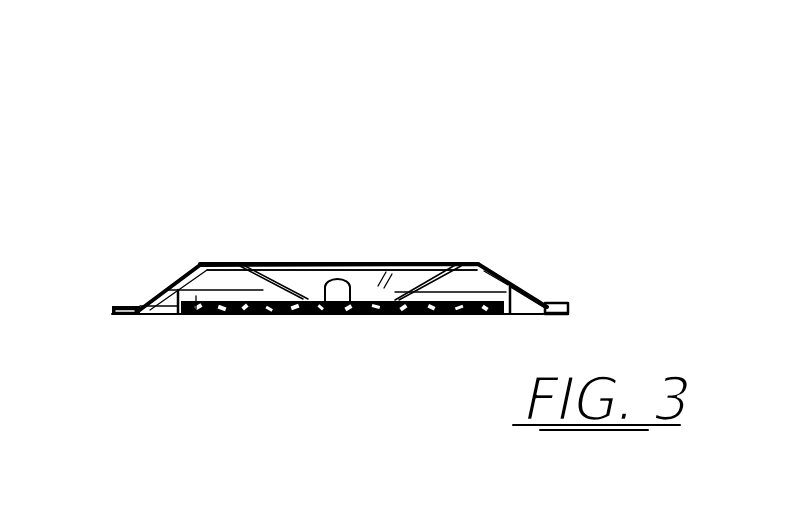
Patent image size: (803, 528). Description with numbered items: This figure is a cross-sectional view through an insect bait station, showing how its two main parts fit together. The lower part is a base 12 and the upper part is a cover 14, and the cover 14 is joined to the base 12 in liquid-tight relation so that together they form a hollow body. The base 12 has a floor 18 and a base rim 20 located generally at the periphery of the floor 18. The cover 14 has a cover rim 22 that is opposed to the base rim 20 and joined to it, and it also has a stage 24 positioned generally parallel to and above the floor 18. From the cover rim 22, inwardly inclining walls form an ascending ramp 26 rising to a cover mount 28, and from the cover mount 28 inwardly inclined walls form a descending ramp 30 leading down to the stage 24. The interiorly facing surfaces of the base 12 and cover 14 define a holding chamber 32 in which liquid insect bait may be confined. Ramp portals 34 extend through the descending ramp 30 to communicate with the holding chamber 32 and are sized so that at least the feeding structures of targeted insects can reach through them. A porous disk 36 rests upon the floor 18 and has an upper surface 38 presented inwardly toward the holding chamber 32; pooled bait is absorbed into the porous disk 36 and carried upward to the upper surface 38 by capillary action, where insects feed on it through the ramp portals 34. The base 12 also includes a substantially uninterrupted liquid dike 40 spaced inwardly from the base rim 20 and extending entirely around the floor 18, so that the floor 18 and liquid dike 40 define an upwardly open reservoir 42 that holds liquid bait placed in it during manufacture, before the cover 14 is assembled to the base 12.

The base 12 is at (353, 314).
The cover 14 is at (417, 298).
The floor 18 is at (494, 306).
The base rim 20 is at (560, 314).
The cover rim 22 is at (560, 303).
The stage 24 is at (365, 297).
The ascending ramp 26 is at (182, 275).
The cover mount 28 is at (212, 263).
The descending ramp 30 is at (280, 264).
The holding chamber 32 is at (231, 276).
The ramp portals 34 is at (337, 280).
The porous disk 36 is at (418, 313).
The upper surface 38 is at (460, 306).
The liquid dike 40 is at (175, 307).
The reservoir 42 is at (196, 296).